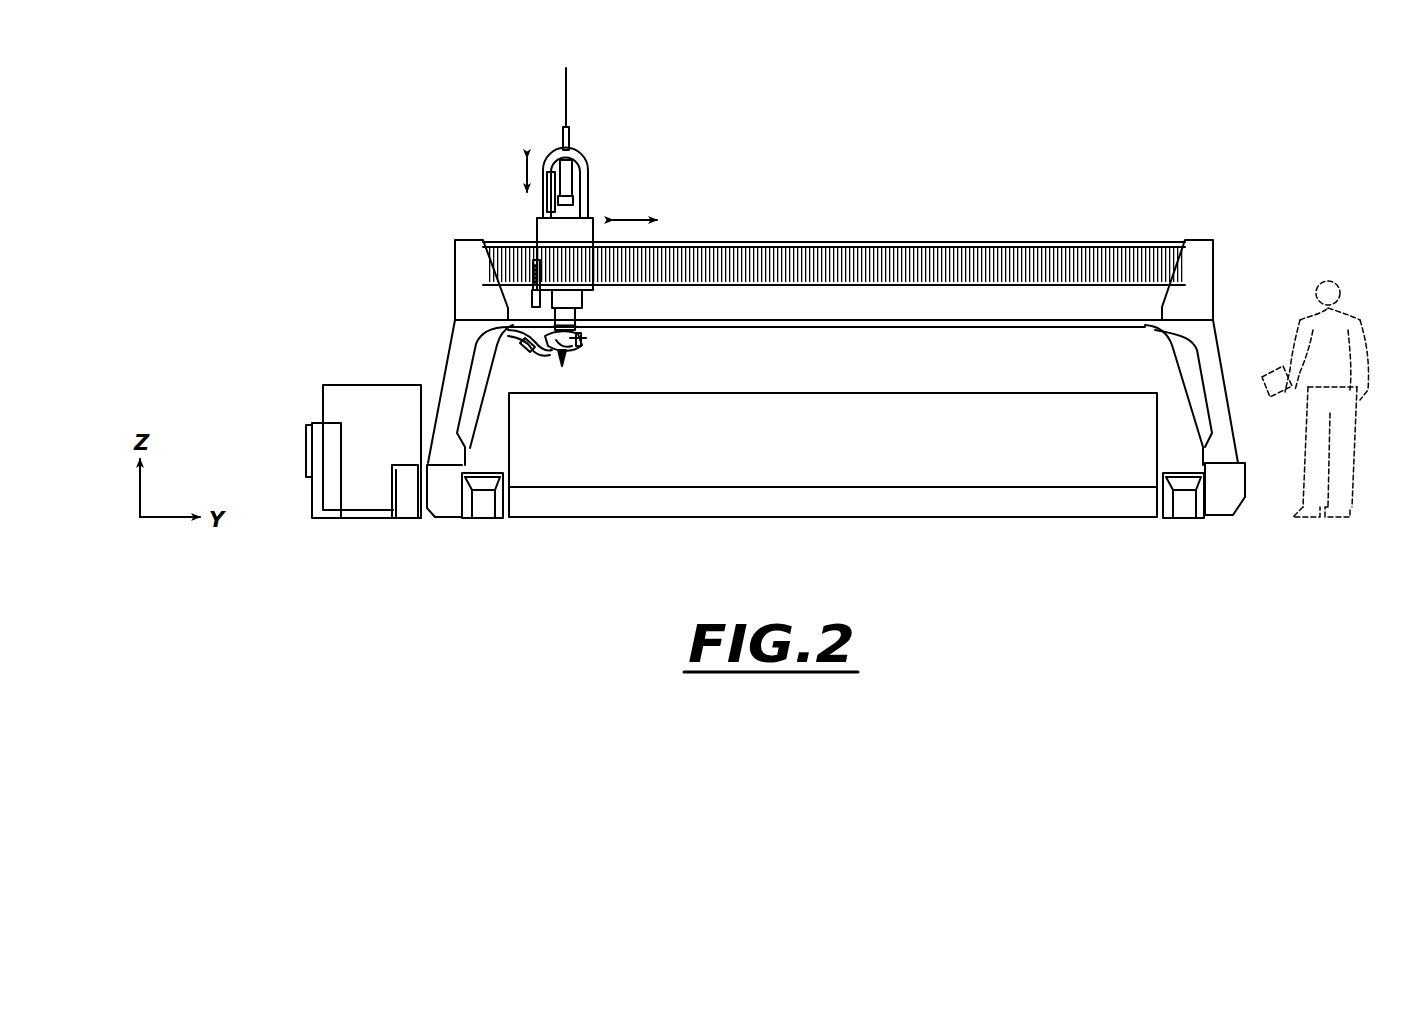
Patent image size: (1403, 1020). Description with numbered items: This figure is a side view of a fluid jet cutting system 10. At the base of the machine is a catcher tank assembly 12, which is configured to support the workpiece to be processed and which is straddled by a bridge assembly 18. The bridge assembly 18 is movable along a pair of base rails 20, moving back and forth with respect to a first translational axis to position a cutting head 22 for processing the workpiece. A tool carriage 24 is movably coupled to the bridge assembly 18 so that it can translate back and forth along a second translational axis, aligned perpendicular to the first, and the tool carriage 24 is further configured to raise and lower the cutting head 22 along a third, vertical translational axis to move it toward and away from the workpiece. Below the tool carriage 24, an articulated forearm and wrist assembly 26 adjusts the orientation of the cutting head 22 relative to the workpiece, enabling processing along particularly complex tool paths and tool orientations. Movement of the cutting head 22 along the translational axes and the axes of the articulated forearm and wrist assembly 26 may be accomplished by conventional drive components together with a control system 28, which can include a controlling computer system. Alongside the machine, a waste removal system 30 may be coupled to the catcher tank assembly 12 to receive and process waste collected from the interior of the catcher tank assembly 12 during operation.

The fluid jet cutting system 10 is at (297, 150).
The catcher tank assembly 12 is at (926, 468).
The bridge assembly 18 is at (820, 262).
The base rails 20 is at (481, 510).
The cutting head 22 is at (565, 363).
The tool carriage 24 is at (573, 230).
The articulated forearm and wrist assembly 26 is at (541, 352).
The control system 28 is at (320, 498).
The waste removal system 30 is at (374, 395).